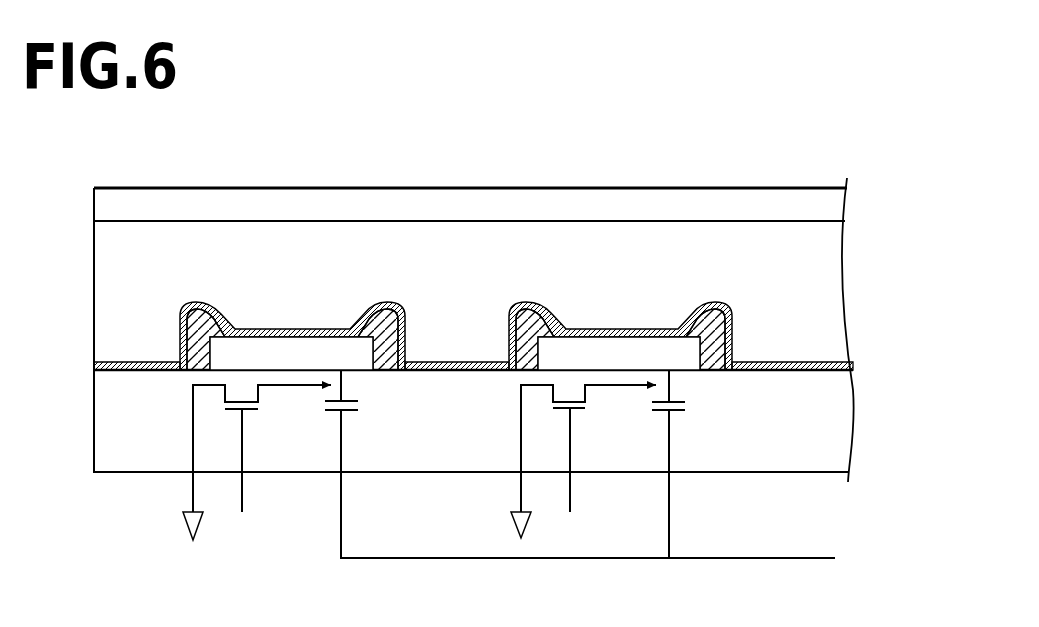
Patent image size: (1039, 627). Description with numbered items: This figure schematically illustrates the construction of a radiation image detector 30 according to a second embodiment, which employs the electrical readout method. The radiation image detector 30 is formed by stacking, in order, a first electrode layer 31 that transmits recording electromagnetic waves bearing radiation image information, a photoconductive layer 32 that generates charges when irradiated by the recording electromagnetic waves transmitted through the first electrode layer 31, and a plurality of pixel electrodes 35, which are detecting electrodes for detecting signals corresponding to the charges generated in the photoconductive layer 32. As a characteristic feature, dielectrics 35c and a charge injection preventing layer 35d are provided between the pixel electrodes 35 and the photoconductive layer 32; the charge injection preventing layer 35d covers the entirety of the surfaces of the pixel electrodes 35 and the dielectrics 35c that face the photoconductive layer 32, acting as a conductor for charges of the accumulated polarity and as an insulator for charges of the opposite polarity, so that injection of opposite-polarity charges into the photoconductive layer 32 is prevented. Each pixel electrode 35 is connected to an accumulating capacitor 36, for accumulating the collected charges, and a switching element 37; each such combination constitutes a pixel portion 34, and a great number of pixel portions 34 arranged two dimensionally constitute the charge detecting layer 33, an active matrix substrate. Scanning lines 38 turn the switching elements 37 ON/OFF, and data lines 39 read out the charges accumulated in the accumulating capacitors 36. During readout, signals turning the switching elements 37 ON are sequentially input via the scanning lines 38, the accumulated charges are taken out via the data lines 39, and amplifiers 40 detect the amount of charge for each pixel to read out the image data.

The radiation image detector 30 is at (789, 154).
The first electrode layer 31 is at (101, 208).
The photoconductive layer 32 is at (101, 275).
The charge detecting layer 33 is at (101, 423).
The pixel portion 34 is at (306, 312).
The pixel electrode 35 is at (291, 348).
The dielectric 35c is at (198, 308).
The charge injection preventing layer 35d is at (823, 363).
The accumulating capacitor 36 is at (359, 422).
The switching element 37 is at (261, 420).
The scanning line 38 is at (243, 495).
The data line 39 is at (193, 494).
The amplifier 40 is at (188, 527).